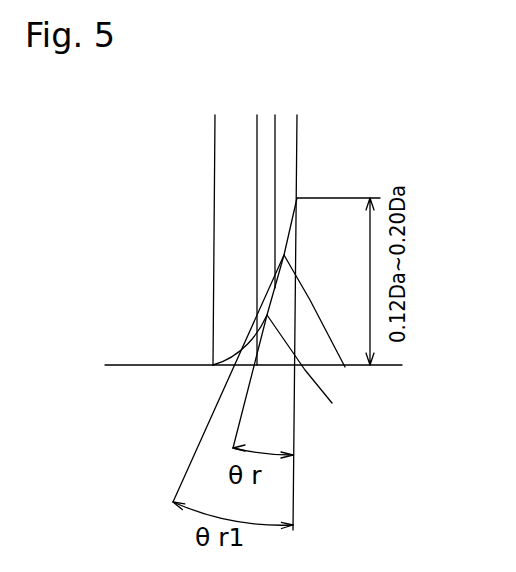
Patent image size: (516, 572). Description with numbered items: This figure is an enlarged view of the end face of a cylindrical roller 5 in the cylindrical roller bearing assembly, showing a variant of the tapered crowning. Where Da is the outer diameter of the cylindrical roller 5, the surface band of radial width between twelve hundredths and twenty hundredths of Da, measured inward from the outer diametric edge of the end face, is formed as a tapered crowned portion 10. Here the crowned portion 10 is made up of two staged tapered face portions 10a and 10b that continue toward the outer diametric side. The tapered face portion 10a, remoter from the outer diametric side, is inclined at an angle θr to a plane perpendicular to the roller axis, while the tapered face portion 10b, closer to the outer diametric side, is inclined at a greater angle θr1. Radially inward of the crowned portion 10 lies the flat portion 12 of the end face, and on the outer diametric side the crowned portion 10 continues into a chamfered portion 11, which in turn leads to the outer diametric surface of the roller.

The cylindrical roller 5 is at (321, 119).
The flat portion 12 is at (297, 158).
The chamfered portion 11 is at (223, 366).
The tapered crowned portion 10 is at (374, 364).
The tapered face portion 10a is at (345, 367).
The tapered face portion 10b is at (332, 403).